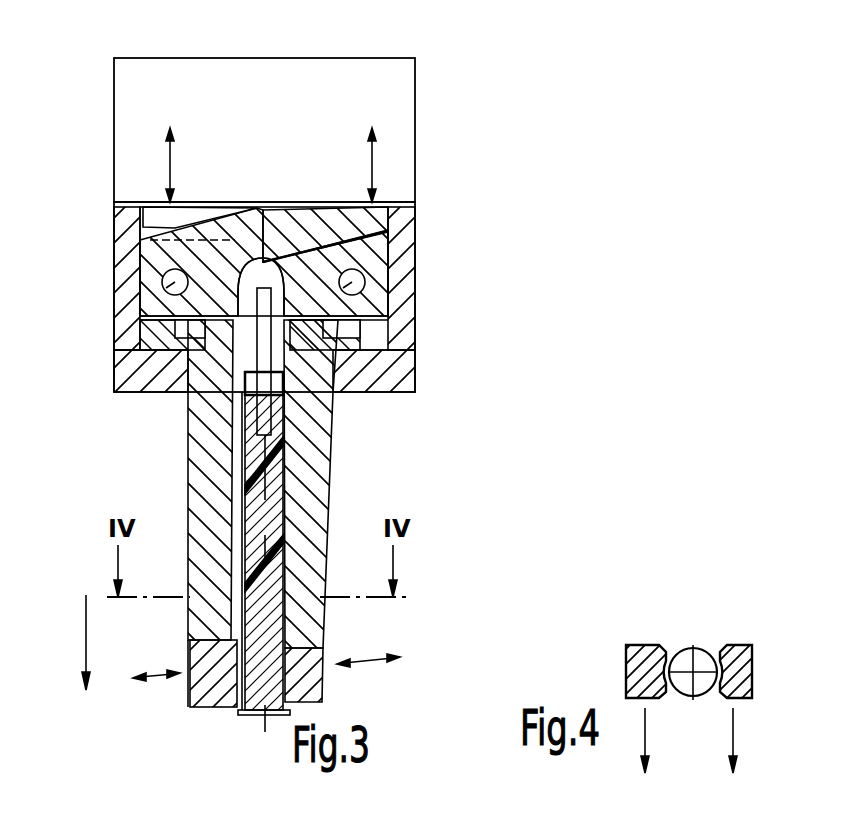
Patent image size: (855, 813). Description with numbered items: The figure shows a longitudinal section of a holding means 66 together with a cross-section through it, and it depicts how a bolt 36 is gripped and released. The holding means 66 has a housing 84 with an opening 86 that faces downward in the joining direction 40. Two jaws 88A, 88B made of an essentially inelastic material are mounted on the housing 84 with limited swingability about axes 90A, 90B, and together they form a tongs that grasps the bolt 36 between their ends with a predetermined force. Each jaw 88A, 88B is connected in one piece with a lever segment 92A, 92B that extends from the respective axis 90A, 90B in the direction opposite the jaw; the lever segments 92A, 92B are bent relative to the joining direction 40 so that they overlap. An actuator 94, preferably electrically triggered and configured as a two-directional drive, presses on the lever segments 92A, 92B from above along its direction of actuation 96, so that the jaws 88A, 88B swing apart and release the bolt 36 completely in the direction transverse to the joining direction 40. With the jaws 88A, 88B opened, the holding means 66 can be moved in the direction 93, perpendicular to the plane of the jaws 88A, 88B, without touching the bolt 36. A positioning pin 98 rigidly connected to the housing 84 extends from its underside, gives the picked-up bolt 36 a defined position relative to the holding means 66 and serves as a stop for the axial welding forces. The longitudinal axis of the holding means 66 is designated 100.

In FIG. 3, the bolt 36 is at (255, 693).
In FIG. 4, the bolt 36 is at (700, 660).
In FIG. 3, the joining direction 40 is at (85, 637).
In FIG. 3, the holding means 66 is at (533, 158).
In FIG. 3, the housing 84 is at (395, 362).
In FIG. 3, the opening 86 is at (355, 352).
In FIG. 3, the jaw 88A is at (200, 455).
In FIG. 4, the jaw 88A is at (640, 645).
In FIG. 3, the jaw 88B is at (330, 447).
In FIG. 4, the jaw 88B is at (735, 645).
In FIG. 3, the axis 90A is at (163, 284).
In FIG. 3, the axis 90B is at (363, 280).
In FIG. 3, the lever segment 92A is at (343, 207).
In FIG. 3, the lever segment 92B is at (150, 205).
In FIG. 4, the direction of motion of the jaws 93 is at (645, 722).
In FIG. 3, the actuator 94 is at (400, 97).
In FIG. 3, the direction of actuation of the actuator 96 is at (165, 157).
In FIG. 3, the positioning pin 98 is at (272, 610).
In FIG. 3, the longitudinal axis of the holding means 100 is at (285, 626).